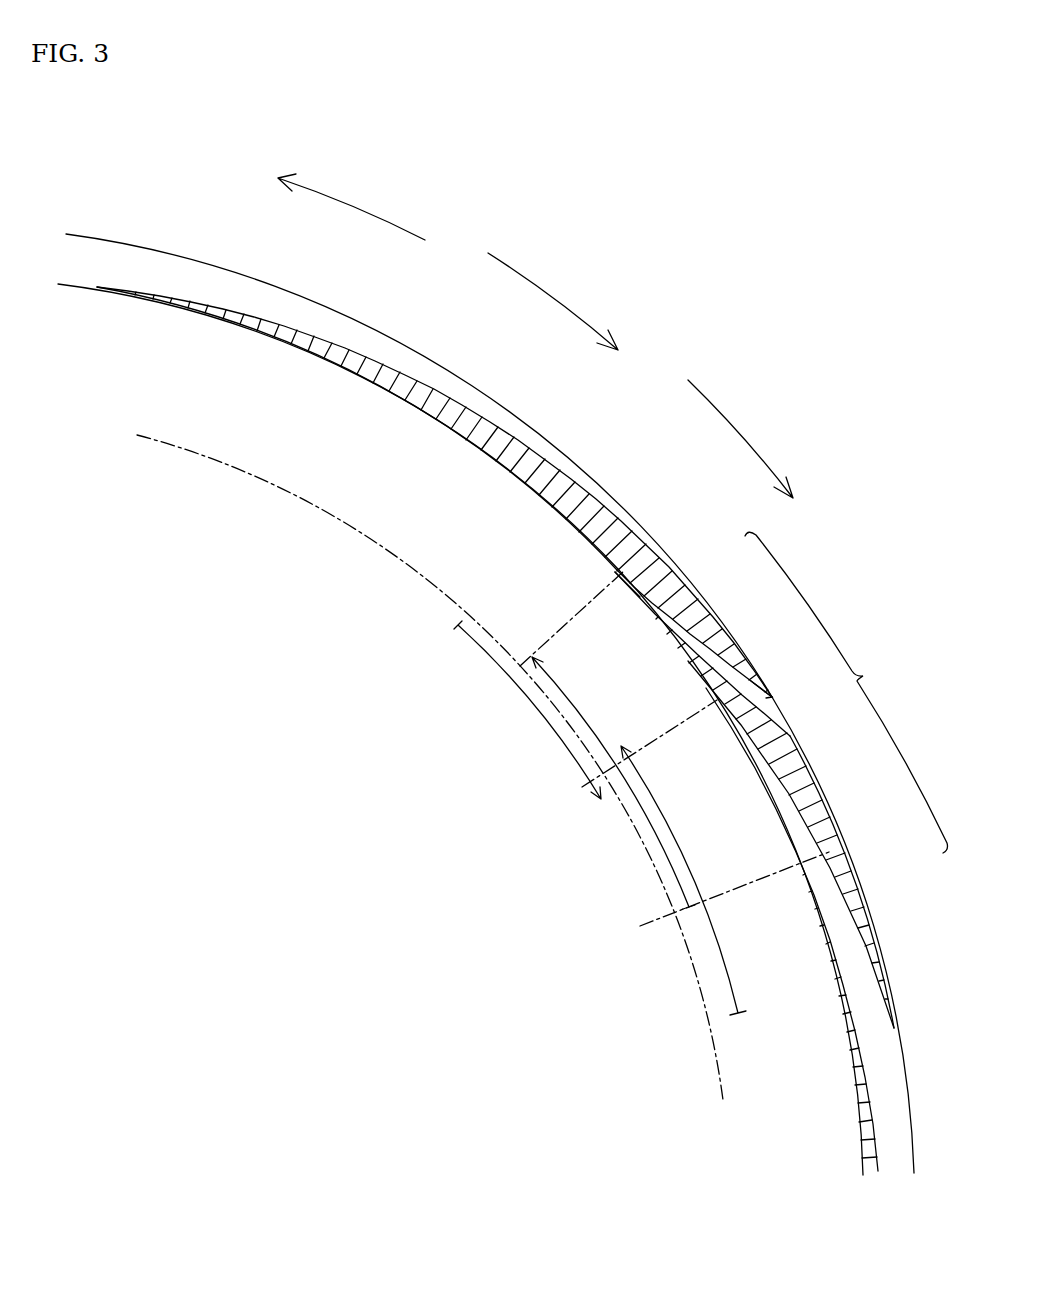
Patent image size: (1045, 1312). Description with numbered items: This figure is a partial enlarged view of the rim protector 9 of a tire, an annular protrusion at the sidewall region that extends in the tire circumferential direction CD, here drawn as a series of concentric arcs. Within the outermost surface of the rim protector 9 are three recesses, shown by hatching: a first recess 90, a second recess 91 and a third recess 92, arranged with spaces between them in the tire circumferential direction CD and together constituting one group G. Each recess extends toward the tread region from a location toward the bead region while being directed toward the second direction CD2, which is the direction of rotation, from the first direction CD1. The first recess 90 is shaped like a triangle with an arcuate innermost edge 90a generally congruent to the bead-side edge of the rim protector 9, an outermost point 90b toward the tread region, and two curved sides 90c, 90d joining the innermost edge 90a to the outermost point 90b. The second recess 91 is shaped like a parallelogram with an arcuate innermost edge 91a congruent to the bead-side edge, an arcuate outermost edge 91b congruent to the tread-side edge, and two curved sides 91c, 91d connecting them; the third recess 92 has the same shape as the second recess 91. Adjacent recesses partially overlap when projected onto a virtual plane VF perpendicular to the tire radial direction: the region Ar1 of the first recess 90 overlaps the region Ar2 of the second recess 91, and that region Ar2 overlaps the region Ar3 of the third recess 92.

The rim protector 9 is at (177, 256).
The first recess 90 is at (436, 491).
The arcuate innermost edge 90a is at (378, 384).
The outermost point 90b is at (773, 698).
The curved side 90c is at (508, 435).
The curved side 90d is at (586, 536).
The second recess 91 is at (745, 872).
The arcuate innermost edge 91a is at (650, 605).
The arcuate outermost edge 91b is at (826, 795).
The curved side 91c is at (793, 736).
The curved side 91d is at (690, 661).
The third recess 92 is at (848, 873).
The group G is at (846, 692).
The virtual plane VF is at (722, 1097).
The tire circumferential direction CD is at (553, 301).
The first direction CD1 is at (351, 206).
The second direction CD2 is at (740, 439).
The region Ar1 is at (520, 693).
The region Ar2 is at (567, 697).
The region Ar3 is at (672, 827).